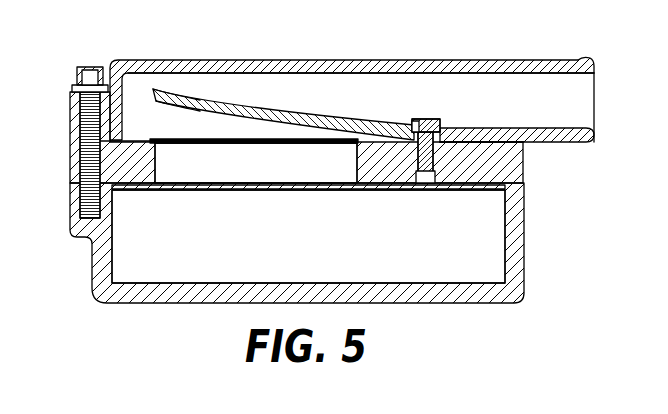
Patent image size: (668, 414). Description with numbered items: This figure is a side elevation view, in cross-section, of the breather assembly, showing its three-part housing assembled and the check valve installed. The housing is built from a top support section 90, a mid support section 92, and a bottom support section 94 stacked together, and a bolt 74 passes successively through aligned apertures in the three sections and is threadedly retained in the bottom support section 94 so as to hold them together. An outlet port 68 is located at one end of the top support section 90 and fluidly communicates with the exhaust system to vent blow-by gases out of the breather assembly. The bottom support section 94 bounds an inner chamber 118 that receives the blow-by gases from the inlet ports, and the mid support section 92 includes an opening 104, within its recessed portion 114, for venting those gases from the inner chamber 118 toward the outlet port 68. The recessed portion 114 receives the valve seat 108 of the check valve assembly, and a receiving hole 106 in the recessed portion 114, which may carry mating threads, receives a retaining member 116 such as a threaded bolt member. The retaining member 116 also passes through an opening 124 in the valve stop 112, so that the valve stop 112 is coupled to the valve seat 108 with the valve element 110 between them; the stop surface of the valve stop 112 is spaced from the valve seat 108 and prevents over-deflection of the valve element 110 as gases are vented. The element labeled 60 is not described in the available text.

The diaphragm plate 60 is at (337, 189).
The outlet port 68 is at (592, 68).
The bolt 74 is at (76, 75).
The top support section 90 is at (440, 73).
The mid support section 92 is at (523, 167).
The bottom support section 94 is at (520, 280).
The opening 104 is at (158, 160).
The receiving hole 106 is at (427, 185).
The valve seat 108 is at (282, 144).
The valve element 110 is at (233, 141).
The valve stop 112 is at (167, 102).
The recessed portion 114 is at (468, 139).
The retaining member 116 is at (413, 118).
The inner chamber 118 is at (485, 228).
The opening 124 is at (412, 128).